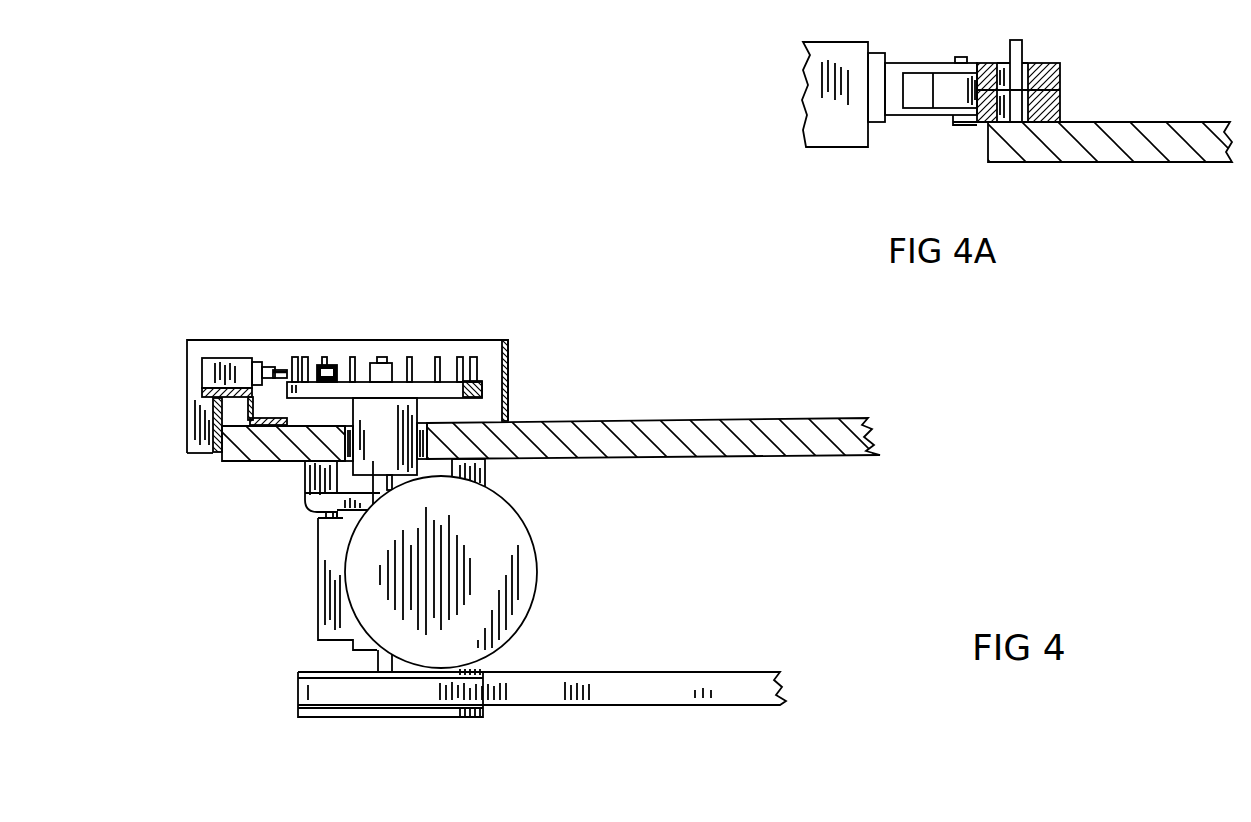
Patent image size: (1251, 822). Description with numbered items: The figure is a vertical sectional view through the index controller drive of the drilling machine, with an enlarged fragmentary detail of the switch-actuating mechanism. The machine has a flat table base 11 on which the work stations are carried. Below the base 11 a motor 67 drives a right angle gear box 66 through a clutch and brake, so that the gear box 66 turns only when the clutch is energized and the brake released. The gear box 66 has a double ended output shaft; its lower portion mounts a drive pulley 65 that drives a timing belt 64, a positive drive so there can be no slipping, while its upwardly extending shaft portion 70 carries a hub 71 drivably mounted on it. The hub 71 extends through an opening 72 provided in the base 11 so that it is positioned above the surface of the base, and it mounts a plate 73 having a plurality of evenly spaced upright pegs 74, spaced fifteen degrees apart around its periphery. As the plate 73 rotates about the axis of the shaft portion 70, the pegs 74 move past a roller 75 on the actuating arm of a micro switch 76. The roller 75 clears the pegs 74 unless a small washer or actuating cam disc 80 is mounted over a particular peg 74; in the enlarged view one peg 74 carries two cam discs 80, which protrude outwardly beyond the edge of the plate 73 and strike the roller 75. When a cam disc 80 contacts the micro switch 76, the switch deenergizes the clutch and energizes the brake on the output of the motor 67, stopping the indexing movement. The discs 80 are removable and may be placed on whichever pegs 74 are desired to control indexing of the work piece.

In FIG. 4, the base 11 is at (605, 443).
In FIG. 4, the timing belt 64 is at (568, 692).
In FIG. 4, the drive pulley 65 is at (333, 717).
In FIG. 4, the right angle gear box 66 is at (330, 575).
In FIG. 4, the motor 67 is at (513, 533).
In FIG. 4, the shaft portion 70 is at (380, 485).
In FIG. 4, the hub 71 is at (383, 433).
In FIG. 4, the opening 72 is at (420, 448).
In FIG. 4, the plate 73 is at (446, 382).
In FIG. 4A, the plate 73 is at (1163, 153).
In FIG. 4, the pegs 74 is at (323, 357).
In FIG. 4A, the pegs 74 is at (1023, 50).
In FIG. 4, the roller 75 is at (280, 368).
In FIG. 4A, the roller 75 is at (960, 97).
In FIG. 4, the micro switch 76 is at (207, 378).
In FIG. 4A, the micro switch 76 is at (827, 120).
In FIG. 4, the actuating cam disc 80 is at (328, 366).
In FIG. 4A, the actuating cam disc 80 is at (1060, 65).